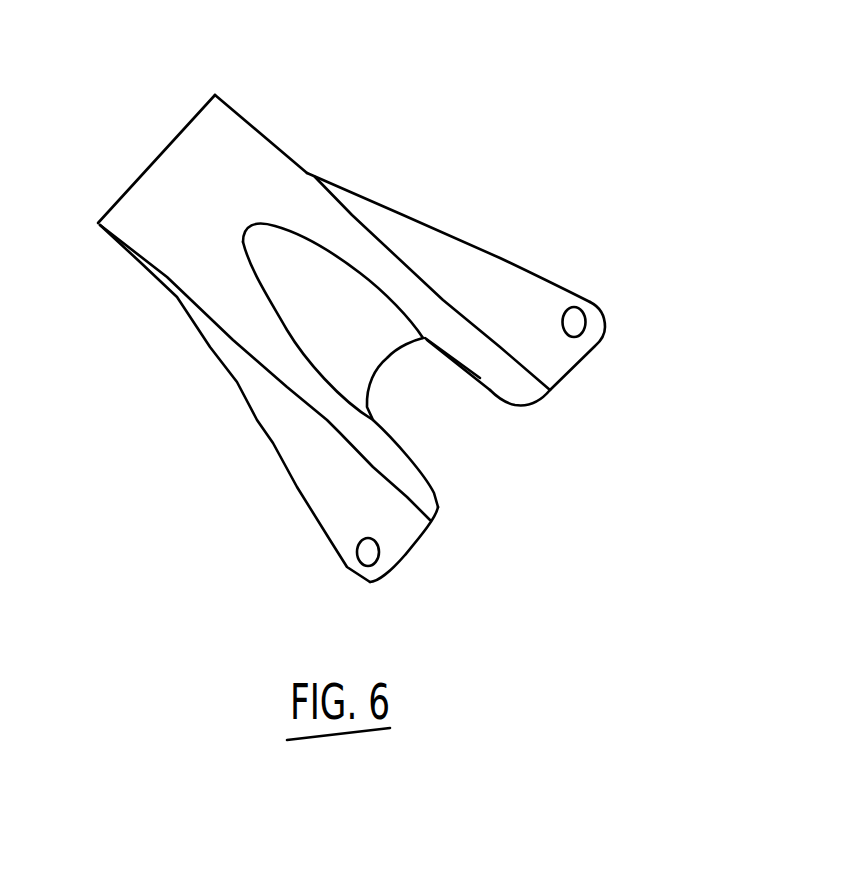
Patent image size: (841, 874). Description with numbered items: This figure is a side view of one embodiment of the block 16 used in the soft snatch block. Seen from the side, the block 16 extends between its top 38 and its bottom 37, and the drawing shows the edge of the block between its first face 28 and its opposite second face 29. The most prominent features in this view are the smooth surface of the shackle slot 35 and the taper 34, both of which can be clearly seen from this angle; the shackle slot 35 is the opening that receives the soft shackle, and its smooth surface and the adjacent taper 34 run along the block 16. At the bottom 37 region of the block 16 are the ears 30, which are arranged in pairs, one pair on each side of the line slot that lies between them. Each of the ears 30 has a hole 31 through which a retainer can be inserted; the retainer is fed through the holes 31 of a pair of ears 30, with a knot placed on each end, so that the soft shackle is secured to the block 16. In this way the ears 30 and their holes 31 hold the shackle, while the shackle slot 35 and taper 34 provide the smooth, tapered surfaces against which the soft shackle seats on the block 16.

The block 16 is at (384, 296).
The first face 28 is at (217, 418).
The second face 29 is at (498, 304).
The ears 30 is at (515, 260).
The holes 31 is at (587, 315).
The taper 34 is at (327, 283).
The shackle slot 35 is at (455, 428).
The bottom 37 is at (575, 407).
The top 38 is at (147, 165).